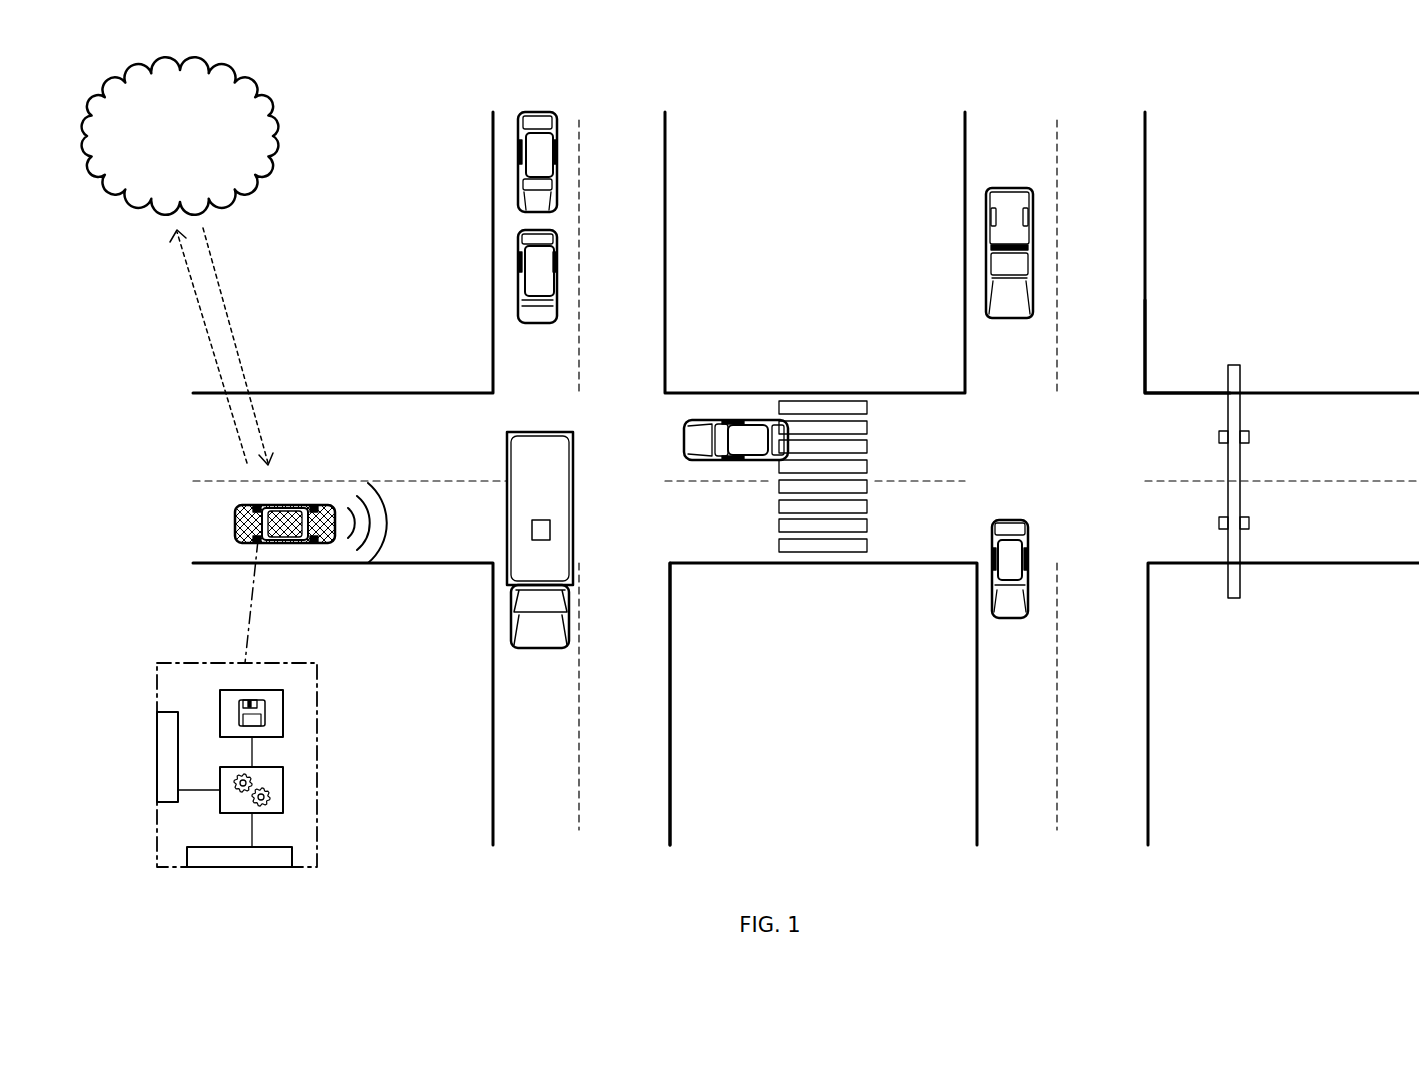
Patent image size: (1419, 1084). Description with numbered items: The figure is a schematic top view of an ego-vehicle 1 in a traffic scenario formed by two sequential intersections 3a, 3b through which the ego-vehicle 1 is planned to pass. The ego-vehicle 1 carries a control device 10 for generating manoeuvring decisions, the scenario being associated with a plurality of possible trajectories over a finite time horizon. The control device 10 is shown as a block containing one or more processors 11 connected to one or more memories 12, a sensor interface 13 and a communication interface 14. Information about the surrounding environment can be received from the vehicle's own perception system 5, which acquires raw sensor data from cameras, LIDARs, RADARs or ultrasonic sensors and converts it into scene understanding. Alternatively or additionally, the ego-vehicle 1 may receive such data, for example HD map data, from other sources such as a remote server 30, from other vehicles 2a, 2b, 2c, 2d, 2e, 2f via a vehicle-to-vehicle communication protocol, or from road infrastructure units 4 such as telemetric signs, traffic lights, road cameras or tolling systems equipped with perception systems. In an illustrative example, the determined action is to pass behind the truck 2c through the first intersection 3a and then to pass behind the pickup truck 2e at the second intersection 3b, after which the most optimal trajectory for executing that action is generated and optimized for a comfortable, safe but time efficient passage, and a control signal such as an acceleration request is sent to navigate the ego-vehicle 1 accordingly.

The ego-vehicle 1 is at (323, 505).
The other vehicle 2a is at (545, 197).
The other vehicle 2b is at (550, 308).
The truck 2c is at (573, 490).
The other vehicle 2d is at (725, 460).
The pickup truck 2e is at (1015, 298).
The other vehicle 2f is at (1012, 603).
The first intersection 3a is at (628, 648).
The second intersection 3b is at (1125, 405).
The road infrastructure unit 4 is at (1258, 369).
The perception system 5 is at (393, 488).
The control device 10 is at (245, 767).
The processor 11 is at (283, 770).
The memory 12 is at (275, 690).
The sensor interface 13 is at (265, 867).
The communication interface 14 is at (157, 798).
The remote server 30 is at (168, 148).